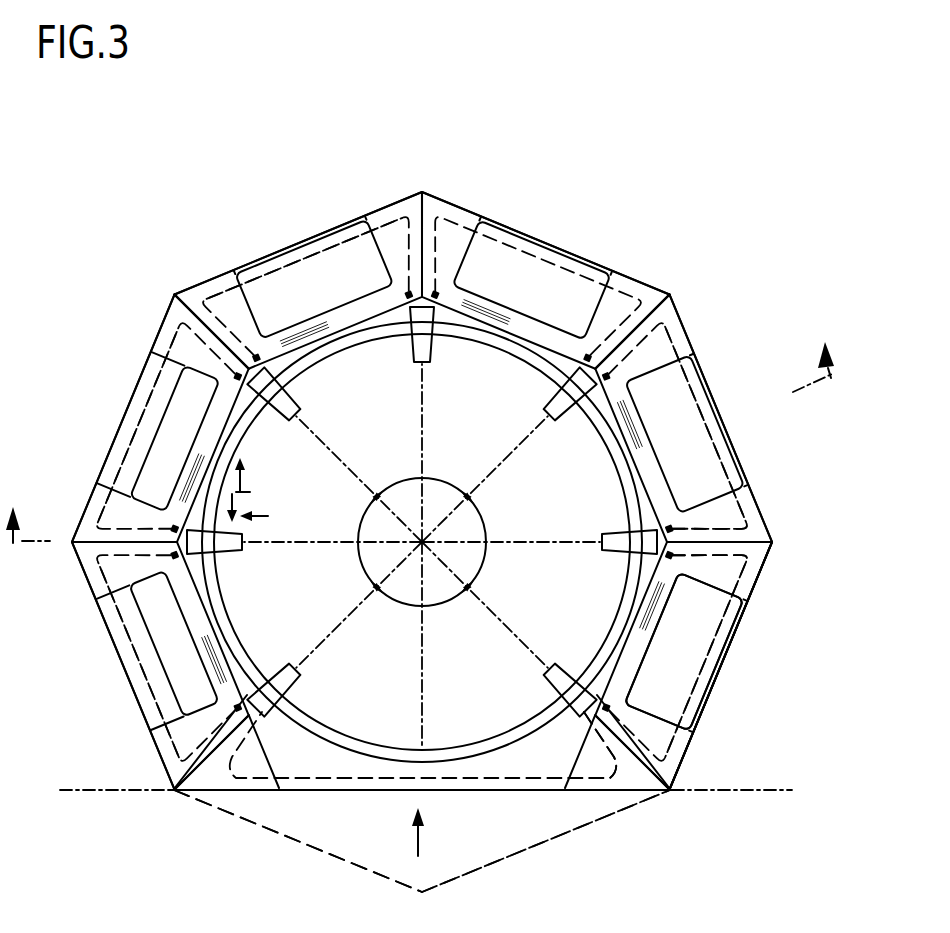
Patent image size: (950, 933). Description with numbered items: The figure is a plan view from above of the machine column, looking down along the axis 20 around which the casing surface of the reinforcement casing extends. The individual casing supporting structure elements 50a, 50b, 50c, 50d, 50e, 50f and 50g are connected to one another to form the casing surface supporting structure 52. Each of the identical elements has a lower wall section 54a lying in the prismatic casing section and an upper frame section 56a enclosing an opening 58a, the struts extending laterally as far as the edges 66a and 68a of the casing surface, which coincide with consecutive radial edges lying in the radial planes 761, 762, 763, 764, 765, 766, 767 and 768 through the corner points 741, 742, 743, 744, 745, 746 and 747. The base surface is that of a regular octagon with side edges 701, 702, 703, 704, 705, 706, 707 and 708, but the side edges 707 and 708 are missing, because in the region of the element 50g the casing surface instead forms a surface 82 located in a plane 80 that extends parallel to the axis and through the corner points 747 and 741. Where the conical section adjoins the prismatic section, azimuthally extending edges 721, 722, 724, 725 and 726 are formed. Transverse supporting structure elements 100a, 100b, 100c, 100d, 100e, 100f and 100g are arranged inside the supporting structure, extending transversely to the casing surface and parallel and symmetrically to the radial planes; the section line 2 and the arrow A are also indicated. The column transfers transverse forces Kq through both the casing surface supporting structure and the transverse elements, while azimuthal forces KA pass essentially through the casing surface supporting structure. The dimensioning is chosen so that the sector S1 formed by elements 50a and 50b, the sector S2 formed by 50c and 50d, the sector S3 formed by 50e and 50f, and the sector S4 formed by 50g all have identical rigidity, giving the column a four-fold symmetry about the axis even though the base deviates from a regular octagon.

The axis 20 is at (416, 544).
The casing supporting structure element 50a is at (728, 684).
The casing supporting structure element 50b is at (745, 447).
The casing supporting structure element 50c is at (604, 262).
The casing supporting structure element 50d is at (336, 212).
The casing supporting structure element 50e is at (130, 376).
The casing supporting structure element 50f is at (122, 688).
The casing supporting structure element 50g is at (372, 812).
The casing surface supporting structure 52 is at (704, 748).
The lower wall section 54a is at (718, 713).
The upper frame section 56a is at (745, 565).
The opening 58a is at (688, 632).
The edge of the casing surface 66a is at (732, 528).
The edge of the casing surface 68a is at (622, 772).
The side edge 701 is at (727, 659).
The side edge 702 is at (706, 372).
The side edge 703 is at (538, 241).
The side edge 704 is at (298, 243).
The side edge 705 is at (160, 343).
The side edge 706 is at (110, 640).
The side edge 707 is at (298, 850).
The side edge 708 is at (560, 840).
The edge 721 is at (749, 584).
The edge 722 is at (728, 418).
The edge 724 is at (210, 288).
The edge 725 is at (96, 515).
The edge 726 is at (162, 762).
The corner point 741 is at (672, 792).
The corner point 742 is at (774, 543).
The corner point 743 is at (672, 297).
The corner point 744 is at (423, 193).
The corner point 745 is at (176, 296).
The corner point 746 is at (76, 548).
The corner point 747 is at (172, 793).
The radial plane 761 is at (482, 608).
The radial plane 762 is at (520, 543).
The radial plane 763 is at (513, 463).
The radial plane 764 is at (424, 435).
The radial plane 765 is at (358, 452).
The radial plane 766 is at (322, 542).
The radial plane 767 is at (345, 598).
The dividing line 768 is at (420, 628).
The plane 80 is at (75, 800).
The surface 82 is at (478, 793).
The transverse supporting structure element 100a is at (573, 738).
The transverse supporting structure element 100b is at (646, 564).
The transverse supporting structure element 100c is at (594, 402).
The transverse supporting structure element 100d is at (450, 318).
The transverse supporting structure element 100e is at (312, 384).
The transverse supporting structure element 100f is at (202, 563).
The transverse supporting structure element 100g is at (250, 686).
The section line 2 is at (425, 464).
The direction arrow A is at (428, 832).
The azimuthal forces KA is at (259, 473).
The transverse forces Kq is at (254, 500).
The sector S1 is at (504, 522).
The sector S2 is at (439, 464).
The sector S3 is at (344, 519).
The sector S4 is at (446, 624).